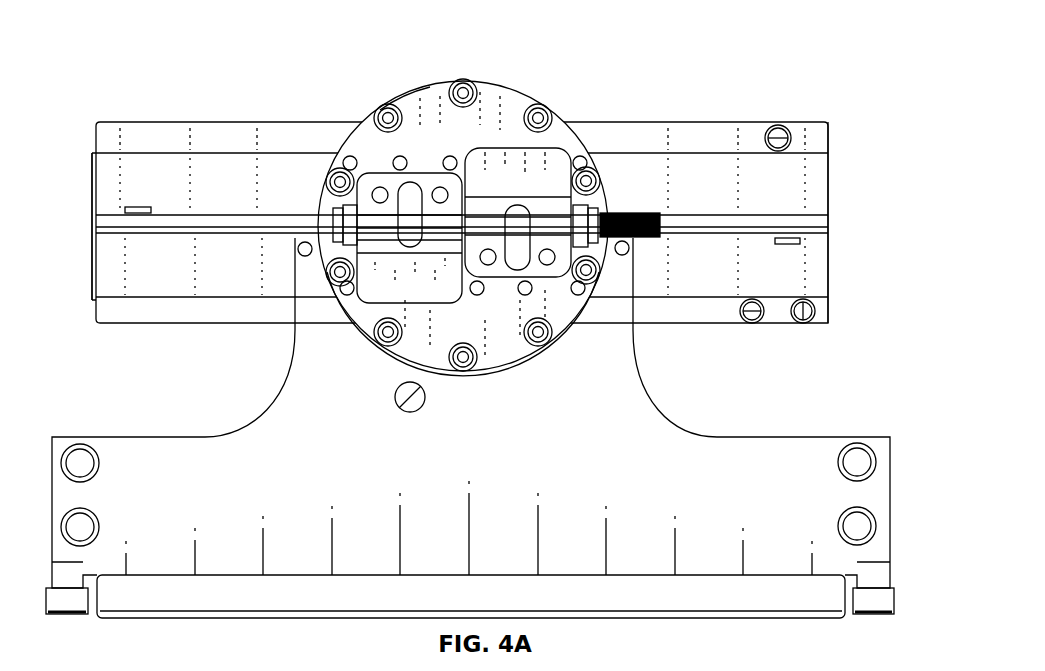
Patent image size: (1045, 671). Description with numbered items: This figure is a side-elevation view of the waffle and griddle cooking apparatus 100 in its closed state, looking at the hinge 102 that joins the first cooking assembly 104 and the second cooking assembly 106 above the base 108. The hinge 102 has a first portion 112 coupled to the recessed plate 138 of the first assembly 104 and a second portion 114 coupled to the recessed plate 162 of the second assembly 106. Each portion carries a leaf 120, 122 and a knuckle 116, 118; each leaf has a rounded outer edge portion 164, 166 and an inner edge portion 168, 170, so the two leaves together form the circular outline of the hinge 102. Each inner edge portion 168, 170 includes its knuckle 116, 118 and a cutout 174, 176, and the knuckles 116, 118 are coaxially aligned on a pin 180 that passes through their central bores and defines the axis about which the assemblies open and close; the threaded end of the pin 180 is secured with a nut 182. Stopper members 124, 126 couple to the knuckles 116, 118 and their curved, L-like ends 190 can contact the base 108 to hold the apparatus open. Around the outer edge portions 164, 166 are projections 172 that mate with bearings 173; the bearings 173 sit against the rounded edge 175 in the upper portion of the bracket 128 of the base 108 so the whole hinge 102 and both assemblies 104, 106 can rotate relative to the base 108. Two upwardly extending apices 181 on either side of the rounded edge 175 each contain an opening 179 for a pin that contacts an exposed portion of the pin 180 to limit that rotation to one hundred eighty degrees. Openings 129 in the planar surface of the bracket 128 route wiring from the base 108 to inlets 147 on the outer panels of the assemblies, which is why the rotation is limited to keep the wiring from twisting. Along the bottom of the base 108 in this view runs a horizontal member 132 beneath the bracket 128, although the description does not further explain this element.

The waffle and griddle cooking apparatus 100 is at (203, 42).
The hinge 102 is at (550, 80).
The first cooking assembly 104 is at (103, 168).
The second cooking assembly 106 is at (830, 262).
The base 108 is at (668, 410).
The first portion 112 is at (495, 98).
The second portion 114 is at (520, 358).
The knuckle 116 is at (370, 232).
The knuckle 118 is at (562, 208).
The leaf 120 is at (373, 117).
The leaf 122 is at (440, 372).
The stopper member 124 is at (351, 158).
The stopper member 126 is at (522, 258).
The bracket 128 is at (469, 526).
The opening 129 is at (860, 460).
The base bar 132 is at (483, 593).
The recessed plate 138 is at (828, 172).
The inlet 147 is at (797, 120).
The recessed plate 162 is at (102, 257).
The rounded outer edge portion 164 is at (420, 92).
The rounded outer edge portion 166 is at (578, 316).
The inner edge portion 168 is at (330, 197).
The inner edge portion 170 is at (330, 252).
The projection 172 is at (338, 285).
The bearing 173 is at (477, 81).
The cutout 174 is at (560, 130).
The rounded edge 175 is at (590, 292).
The cutout 176 is at (368, 330).
The opening 179 is at (628, 253).
The pin 180 is at (335, 240).
The apex 181 is at (633, 240).
The nut 182 is at (598, 228).
The end 190 is at (410, 413).